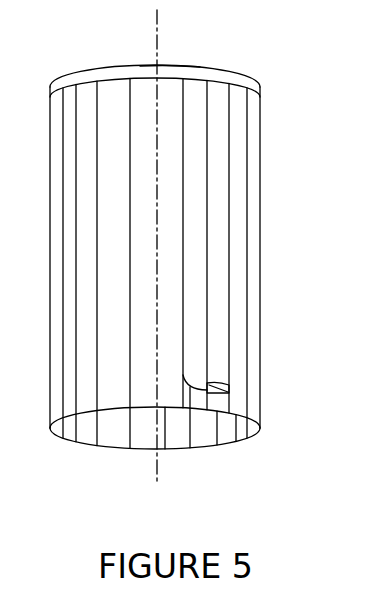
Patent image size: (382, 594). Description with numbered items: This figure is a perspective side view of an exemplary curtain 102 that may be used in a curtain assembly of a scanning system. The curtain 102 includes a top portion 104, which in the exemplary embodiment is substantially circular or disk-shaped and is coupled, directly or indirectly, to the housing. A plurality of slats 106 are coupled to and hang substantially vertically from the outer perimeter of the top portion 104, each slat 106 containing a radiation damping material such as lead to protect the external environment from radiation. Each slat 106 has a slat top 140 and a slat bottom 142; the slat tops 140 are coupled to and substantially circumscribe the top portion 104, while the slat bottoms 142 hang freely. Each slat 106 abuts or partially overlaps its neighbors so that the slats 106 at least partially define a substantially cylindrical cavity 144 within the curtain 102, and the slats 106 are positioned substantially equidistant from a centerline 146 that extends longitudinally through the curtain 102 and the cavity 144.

The curtain 102 is at (262, 144).
The top portion 104 is at (212, 68).
The slats 106 is at (252, 203).
The slat top 140 is at (253, 107).
The slat bottom 142 is at (229, 385).
The cavity 144 is at (203, 435).
The centerline 146 is at (155, 470).